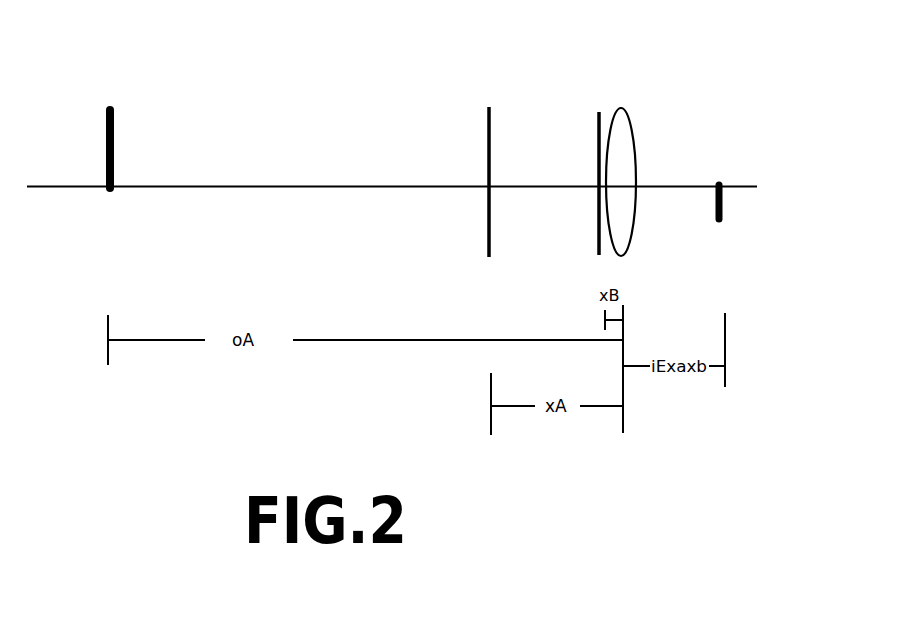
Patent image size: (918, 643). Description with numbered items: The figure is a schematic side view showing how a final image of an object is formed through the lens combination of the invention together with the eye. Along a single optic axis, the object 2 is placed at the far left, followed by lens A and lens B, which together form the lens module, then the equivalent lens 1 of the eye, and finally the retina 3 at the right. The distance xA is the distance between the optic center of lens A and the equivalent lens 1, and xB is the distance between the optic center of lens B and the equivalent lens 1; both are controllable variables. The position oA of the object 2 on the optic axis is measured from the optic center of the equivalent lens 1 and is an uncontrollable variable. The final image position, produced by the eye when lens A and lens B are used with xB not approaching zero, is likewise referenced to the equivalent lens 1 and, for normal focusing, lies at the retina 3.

The equivalent lens of an eye 1 is at (633, 130).
The object 2 is at (117, 125).
The retina 3 is at (723, 205).
The lens A is at (489, 153).
The lens B is at (599, 157).